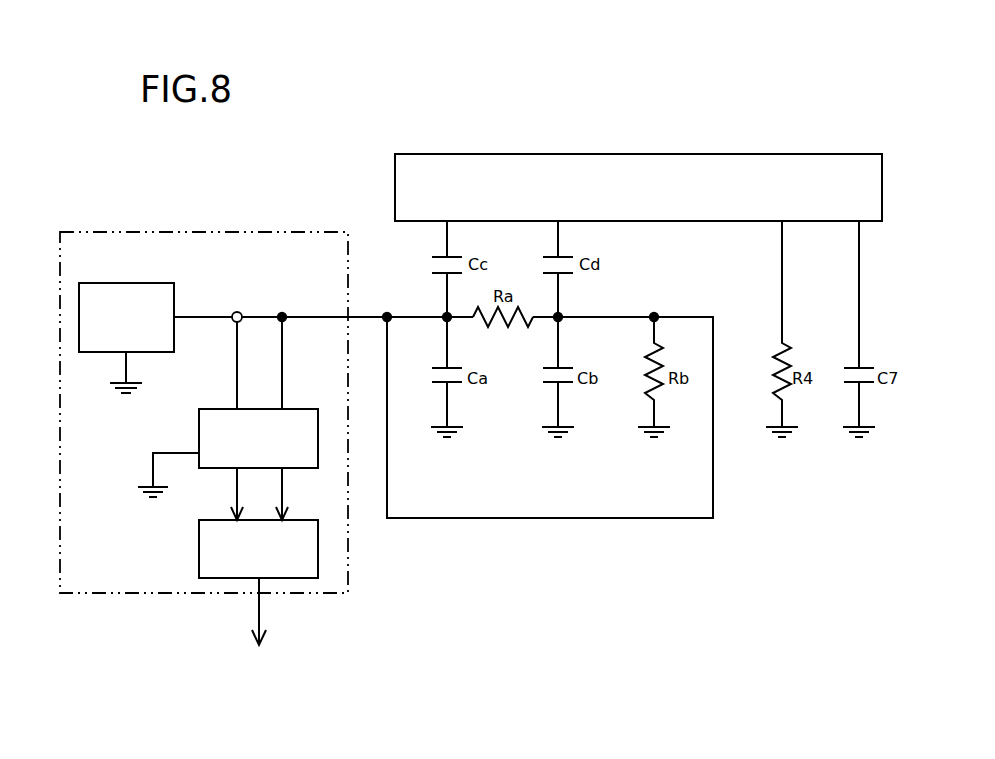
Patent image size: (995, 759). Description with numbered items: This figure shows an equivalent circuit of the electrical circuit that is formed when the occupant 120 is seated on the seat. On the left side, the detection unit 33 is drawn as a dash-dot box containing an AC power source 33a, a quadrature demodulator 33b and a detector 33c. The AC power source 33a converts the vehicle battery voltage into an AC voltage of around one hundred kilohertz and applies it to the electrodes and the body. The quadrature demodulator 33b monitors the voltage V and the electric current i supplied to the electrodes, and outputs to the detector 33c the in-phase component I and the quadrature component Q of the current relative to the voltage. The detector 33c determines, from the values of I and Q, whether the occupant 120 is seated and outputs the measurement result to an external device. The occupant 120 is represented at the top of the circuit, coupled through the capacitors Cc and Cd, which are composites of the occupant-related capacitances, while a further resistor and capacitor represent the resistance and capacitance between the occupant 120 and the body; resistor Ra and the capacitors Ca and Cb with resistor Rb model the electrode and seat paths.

The detection unit 33 is at (293, 229).
The AC power source 33a is at (155, 282).
The quadrature demodulator 33b is at (199, 424).
The detector 33c is at (199, 534).
The occupant 120 is at (836, 150).